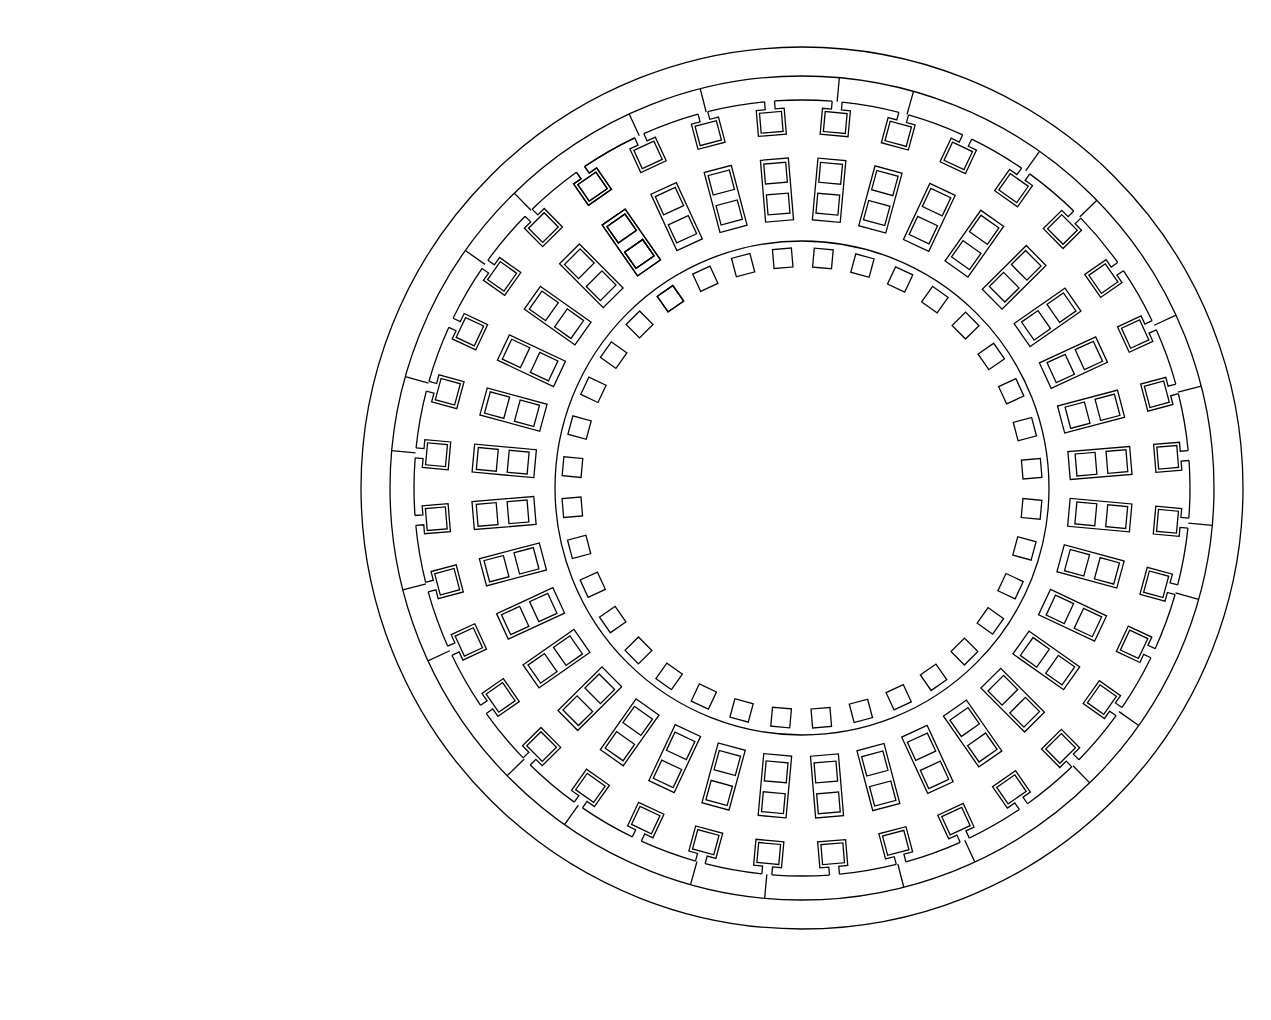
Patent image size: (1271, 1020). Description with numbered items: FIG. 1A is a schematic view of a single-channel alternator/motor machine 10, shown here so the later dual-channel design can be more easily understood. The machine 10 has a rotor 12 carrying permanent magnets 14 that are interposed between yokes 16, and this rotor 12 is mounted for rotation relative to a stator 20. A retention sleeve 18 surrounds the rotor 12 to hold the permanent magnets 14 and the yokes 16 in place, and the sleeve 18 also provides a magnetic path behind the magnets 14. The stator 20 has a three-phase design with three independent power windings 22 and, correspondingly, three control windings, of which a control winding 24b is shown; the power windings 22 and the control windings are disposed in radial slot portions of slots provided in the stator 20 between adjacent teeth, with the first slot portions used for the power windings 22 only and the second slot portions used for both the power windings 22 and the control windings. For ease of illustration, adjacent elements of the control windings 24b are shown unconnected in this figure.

The machine 10 is at (440, 97).
The rotor 12 is at (380, 345).
The permanent magnets 14 is at (460, 702).
The yokes 16 is at (408, 422).
The retention sleeve 18 is at (430, 283).
The stator 20 is at (525, 257).
The power winding 22 is at (624, 222).
The sensor element 24b is at (642, 255).